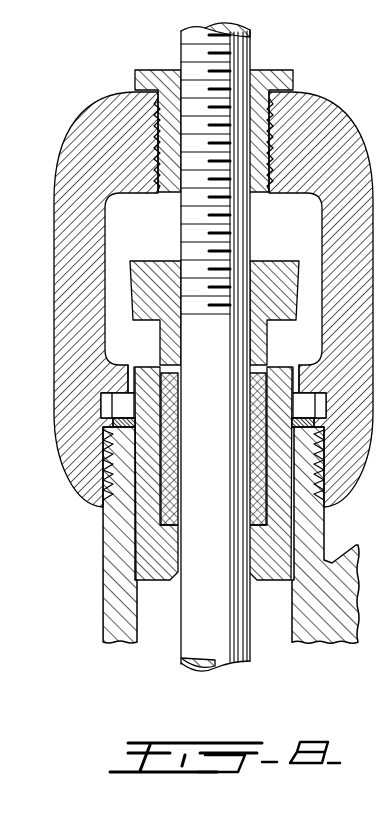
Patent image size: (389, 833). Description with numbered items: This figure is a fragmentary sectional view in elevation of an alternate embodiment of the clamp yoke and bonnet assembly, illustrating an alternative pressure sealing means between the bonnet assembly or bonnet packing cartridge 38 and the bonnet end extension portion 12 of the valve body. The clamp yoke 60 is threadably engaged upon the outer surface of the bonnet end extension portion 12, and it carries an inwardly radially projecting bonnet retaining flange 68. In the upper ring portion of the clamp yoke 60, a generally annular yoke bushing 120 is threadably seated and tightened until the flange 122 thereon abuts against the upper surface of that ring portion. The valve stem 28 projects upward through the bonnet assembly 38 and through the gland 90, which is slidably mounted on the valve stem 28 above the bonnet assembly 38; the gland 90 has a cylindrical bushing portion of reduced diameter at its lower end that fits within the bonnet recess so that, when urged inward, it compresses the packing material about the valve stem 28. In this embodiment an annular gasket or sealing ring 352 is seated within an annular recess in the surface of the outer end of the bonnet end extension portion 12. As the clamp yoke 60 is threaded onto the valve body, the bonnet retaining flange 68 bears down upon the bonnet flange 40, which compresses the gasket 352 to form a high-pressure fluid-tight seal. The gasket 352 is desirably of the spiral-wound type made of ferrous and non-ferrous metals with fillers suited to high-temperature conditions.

The bonnet end extension portion 12 is at (112, 549).
The valve stem 28 is at (218, 488).
The bonnet assembly 38 is at (146, 516).
The bonnet flange 40 is at (101, 400).
The clamp yoke 60 is at (37, 129).
The bonnet retaining flange 68 is at (121, 378).
The gland 90 is at (143, 252).
The yoke bushing 120 is at (262, 116).
The flange 122 is at (288, 72).
The sealing ring 352 is at (113, 422).